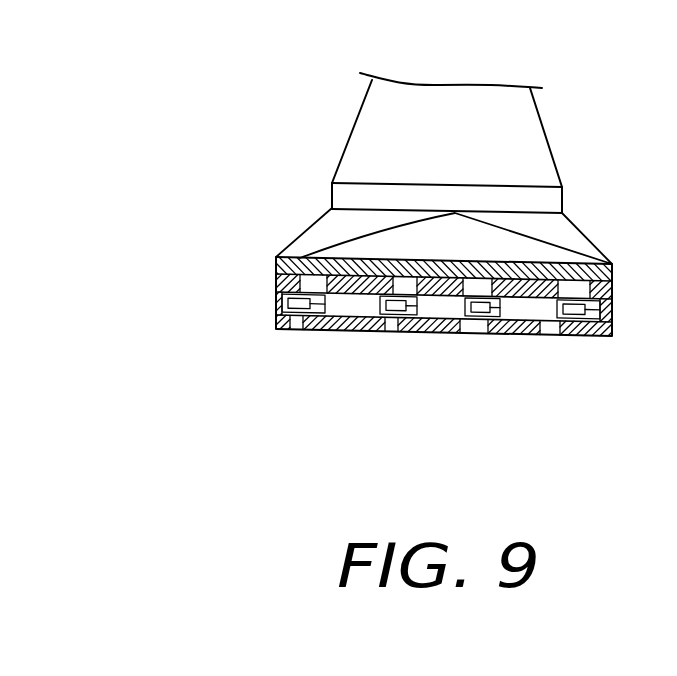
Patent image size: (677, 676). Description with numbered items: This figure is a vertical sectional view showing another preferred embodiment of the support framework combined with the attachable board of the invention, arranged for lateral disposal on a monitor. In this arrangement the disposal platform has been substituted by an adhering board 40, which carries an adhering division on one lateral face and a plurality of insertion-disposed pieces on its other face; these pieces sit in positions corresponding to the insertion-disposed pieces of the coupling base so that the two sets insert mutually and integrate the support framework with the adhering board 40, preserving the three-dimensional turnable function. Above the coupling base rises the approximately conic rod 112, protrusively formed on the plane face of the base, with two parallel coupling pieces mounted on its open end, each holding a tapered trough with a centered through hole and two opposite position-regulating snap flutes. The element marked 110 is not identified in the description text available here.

The conic rod 112 is at (522, 150).
The light guide 110 is at (548, 253).
The adhering board 40 is at (444, 353).